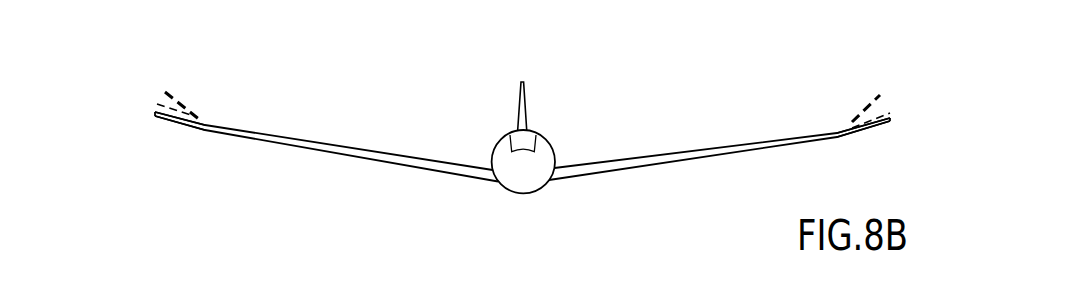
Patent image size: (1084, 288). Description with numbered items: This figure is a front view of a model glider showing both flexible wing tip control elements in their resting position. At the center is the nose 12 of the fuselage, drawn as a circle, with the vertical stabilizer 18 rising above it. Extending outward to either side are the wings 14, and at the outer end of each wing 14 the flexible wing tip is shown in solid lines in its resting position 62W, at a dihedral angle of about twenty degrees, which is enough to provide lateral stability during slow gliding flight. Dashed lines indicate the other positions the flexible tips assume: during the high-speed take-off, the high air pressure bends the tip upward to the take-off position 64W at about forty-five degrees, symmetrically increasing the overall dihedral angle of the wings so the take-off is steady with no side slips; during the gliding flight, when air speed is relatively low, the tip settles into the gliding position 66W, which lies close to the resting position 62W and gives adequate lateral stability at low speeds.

The nose 12 is at (533, 187).
The wing 14 is at (357, 150).
The vertical stabilizer 18 is at (525, 96).
The resting position 62W is at (150, 118).
The take-off position 64W is at (164, 82).
The gliding position 66W is at (155, 102).